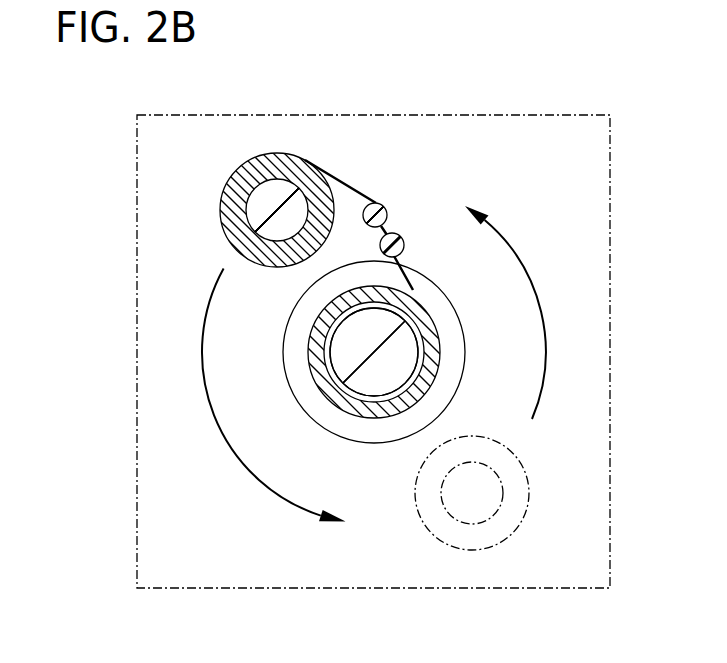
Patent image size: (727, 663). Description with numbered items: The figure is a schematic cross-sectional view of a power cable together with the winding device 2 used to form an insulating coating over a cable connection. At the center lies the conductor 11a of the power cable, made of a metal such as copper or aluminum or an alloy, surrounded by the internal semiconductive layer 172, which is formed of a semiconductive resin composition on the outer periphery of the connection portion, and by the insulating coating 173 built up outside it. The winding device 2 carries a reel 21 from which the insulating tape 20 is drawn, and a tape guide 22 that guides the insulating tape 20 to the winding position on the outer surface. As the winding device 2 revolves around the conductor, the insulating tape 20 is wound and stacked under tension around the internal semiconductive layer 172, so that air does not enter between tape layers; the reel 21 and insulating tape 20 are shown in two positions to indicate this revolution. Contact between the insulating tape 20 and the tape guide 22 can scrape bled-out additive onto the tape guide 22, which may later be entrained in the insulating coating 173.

The winding device 2 is at (436, 101).
The insulating tape 20 is at (240, 183).
The reel 21 is at (286, 184).
The tape guide 22 is at (388, 203).
The conductor 11a is at (348, 339).
The internal semiconductive layer 172 is at (352, 400).
The insulating coating 173 is at (372, 400).